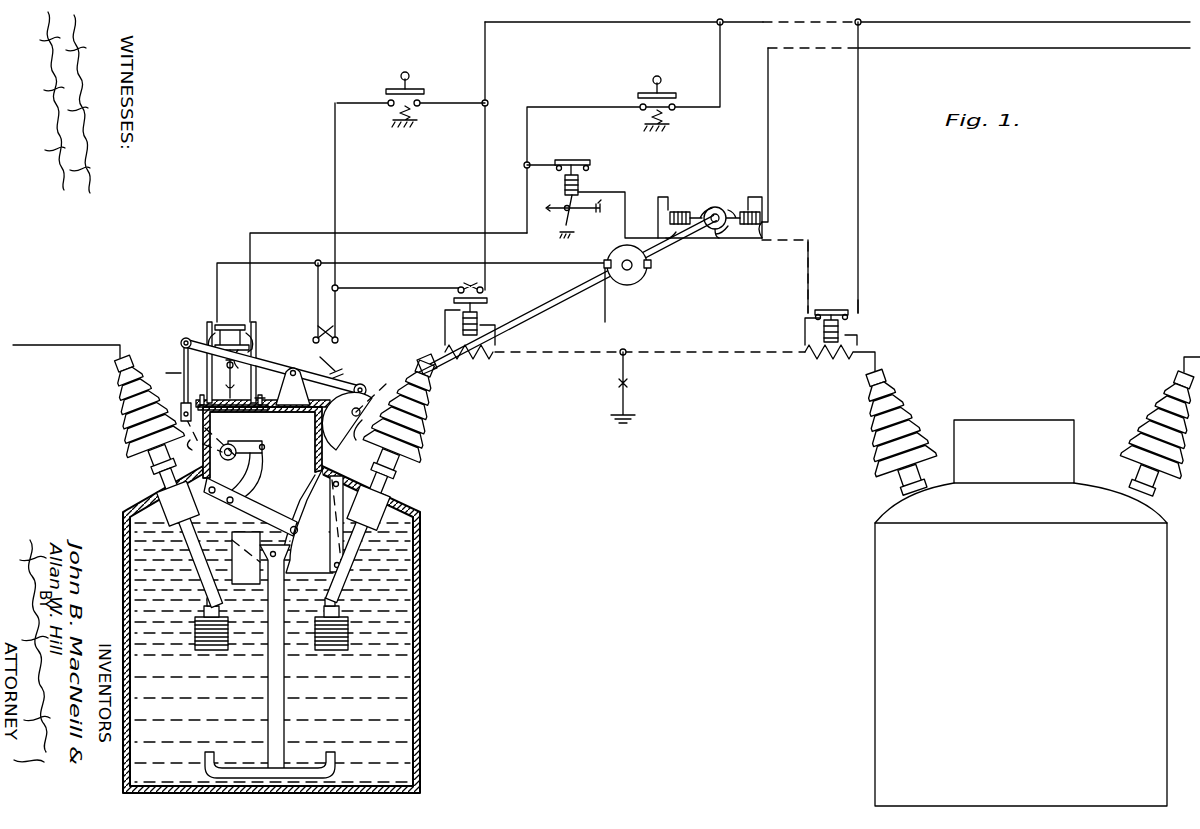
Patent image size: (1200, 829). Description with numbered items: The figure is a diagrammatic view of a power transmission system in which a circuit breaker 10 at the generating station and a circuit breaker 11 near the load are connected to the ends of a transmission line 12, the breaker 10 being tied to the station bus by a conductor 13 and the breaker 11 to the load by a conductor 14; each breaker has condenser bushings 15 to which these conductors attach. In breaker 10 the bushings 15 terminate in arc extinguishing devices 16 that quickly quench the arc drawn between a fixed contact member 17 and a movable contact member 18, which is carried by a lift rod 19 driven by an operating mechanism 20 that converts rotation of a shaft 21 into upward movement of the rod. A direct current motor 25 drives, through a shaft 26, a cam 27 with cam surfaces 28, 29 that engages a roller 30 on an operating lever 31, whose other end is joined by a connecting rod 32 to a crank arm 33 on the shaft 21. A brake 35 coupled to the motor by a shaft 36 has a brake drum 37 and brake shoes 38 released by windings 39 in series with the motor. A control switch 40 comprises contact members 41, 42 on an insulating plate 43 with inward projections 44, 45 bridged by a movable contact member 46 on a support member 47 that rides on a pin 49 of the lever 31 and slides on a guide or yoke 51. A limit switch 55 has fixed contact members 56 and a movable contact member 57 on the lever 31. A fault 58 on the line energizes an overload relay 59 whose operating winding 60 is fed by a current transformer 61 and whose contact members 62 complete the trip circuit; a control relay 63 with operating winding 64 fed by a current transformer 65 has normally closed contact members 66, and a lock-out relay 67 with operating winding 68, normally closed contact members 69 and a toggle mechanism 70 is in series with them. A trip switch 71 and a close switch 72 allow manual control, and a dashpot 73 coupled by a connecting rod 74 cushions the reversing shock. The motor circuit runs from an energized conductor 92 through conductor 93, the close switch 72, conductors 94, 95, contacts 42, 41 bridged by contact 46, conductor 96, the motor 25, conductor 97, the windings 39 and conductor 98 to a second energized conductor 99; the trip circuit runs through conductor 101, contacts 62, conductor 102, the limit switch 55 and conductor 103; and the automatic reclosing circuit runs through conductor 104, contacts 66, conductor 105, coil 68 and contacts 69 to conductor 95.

The circuit breaker 10 is at (288, 629).
The circuit breaker 11 is at (1003, 613).
The transmission line 12 is at (701, 352).
The conductor 13 is at (28, 346).
The conductor 14 is at (1190, 342).
The condenser bushings 15 is at (126, 411).
The arc extinguishing devices 16 is at (192, 646).
The fixed contact member 17 is at (220, 605).
The movable contact member 18 is at (238, 770).
The lift rod 19 is at (266, 643).
The operating mechanism 20 is at (264, 486).
The shaft 21 is at (232, 444).
The motor 25 is at (627, 275).
The shaft 26 is at (540, 320).
The cam 27 is at (408, 353).
The cam surface 28 is at (412, 366).
The cam surface 29 is at (359, 452).
The roller 30 is at (378, 370).
The operating lever 31 is at (286, 352).
The connecting rod 32 is at (165, 373).
The crank arm 33 is at (196, 452).
The brake 35 is at (715, 201).
The shaft 36 is at (664, 250).
The brake drum 37 is at (718, 243).
The brake shoes 38 is at (690, 205).
The windings 39 is at (660, 232).
The control switch 40 is at (209, 322).
The contact member 41 is at (194, 401).
The contact member 42 is at (262, 394).
The insulating plate 43 is at (268, 391).
The projection 44 is at (196, 372).
The projection 45 is at (262, 350).
The movable contact member 46 is at (250, 338).
The support member 47 is at (270, 362).
The pin 49 is at (184, 336).
The guide or yoke 51 is at (232, 326).
The limit switch 55 is at (338, 330).
The fixed contact members 56 is at (325, 330).
The movable contact member 57 is at (321, 366).
The fault 58 is at (632, 383).
The overload relay 59 is at (485, 318).
The operating winding 60 is at (444, 320).
The current transformer 61 is at (469, 363).
The contact members 62 is at (470, 291).
The control relay 63 is at (842, 331).
The operating winding 64 is at (822, 326).
The current transformer 65 is at (840, 365).
The contact members 66 is at (838, 305).
The lock-out relay 67 is at (575, 187).
The operating winding 68 is at (563, 178).
The contact members 69 is at (572, 158).
The toggle mechanism 70 is at (555, 196).
The trip switch 71 is at (411, 84).
The close switch 72 is at (664, 88).
The dashpot 73 is at (232, 562).
The connecting rod 74 is at (230, 538).
The energized conductor 92 is at (748, 30).
The conductor 93 is at (721, 92).
The conductor 94 is at (528, 142).
The conductor 95 is at (372, 232).
The conductor 96 is at (282, 262).
The conductor 97 is at (656, 196).
The conductor 98 is at (769, 160).
The energized conductor 99 is at (800, 53).
The conductor 101 is at (487, 90).
The conductor 102 is at (403, 274).
The conductor 103 is at (318, 300).
The conductor 104 is at (857, 190).
The conductor 105 is at (808, 257).